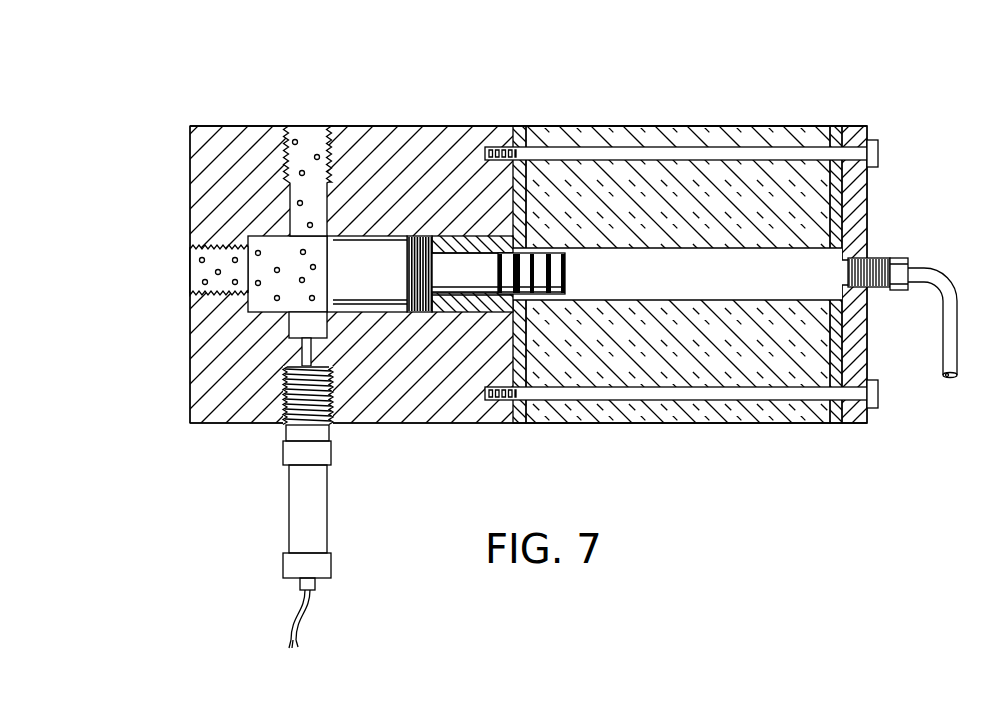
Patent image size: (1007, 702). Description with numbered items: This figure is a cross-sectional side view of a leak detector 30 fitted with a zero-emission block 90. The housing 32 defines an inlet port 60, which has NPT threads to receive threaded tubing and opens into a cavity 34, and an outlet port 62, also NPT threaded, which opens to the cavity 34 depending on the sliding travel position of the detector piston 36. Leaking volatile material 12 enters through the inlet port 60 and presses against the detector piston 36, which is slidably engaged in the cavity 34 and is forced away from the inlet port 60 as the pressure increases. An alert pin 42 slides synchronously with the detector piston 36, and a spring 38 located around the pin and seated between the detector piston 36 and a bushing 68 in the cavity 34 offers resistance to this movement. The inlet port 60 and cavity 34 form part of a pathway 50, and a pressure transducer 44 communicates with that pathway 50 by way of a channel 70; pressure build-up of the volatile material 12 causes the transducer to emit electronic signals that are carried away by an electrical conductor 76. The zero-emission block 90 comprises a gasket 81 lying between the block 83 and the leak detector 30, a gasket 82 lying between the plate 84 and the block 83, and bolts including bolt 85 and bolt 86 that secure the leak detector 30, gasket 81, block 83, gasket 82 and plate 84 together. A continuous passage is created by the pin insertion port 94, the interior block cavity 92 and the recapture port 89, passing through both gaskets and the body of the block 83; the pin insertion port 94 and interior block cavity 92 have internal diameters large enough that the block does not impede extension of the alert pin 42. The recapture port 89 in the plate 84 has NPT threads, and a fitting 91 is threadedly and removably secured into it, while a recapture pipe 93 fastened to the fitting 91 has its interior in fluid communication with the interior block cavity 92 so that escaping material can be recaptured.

The volatile material 12 is at (199, 258).
The leak detector 30 is at (404, 443).
The housing 32 is at (418, 127).
The cavity 34 is at (258, 300).
The detector piston 36 is at (344, 285).
The spring 38 is at (415, 312).
The alert pin 42 is at (471, 267).
The pressure transducer 44 is at (290, 507).
The pathway 50 is at (187, 287).
The inlet port 60 is at (192, 270).
The outlet port 62 is at (309, 135).
The bushing 68 is at (476, 305).
The channel 70 is at (292, 333).
The electrical conductor 76 is at (298, 628).
The gasket 81 is at (515, 418).
The gasket 82 is at (835, 408).
The block 83 is at (677, 413).
The plate 84 is at (858, 412).
The bolt 85 is at (880, 153).
The bolt 86 is at (880, 395).
The recapture port 89 is at (858, 258).
The zero-emission block 90 is at (643, 97).
The fitting 91 is at (898, 292).
The interior block cavity 92 is at (765, 273).
The recapture pipe 93 is at (950, 350).
The pin insertion port 94 is at (540, 248).